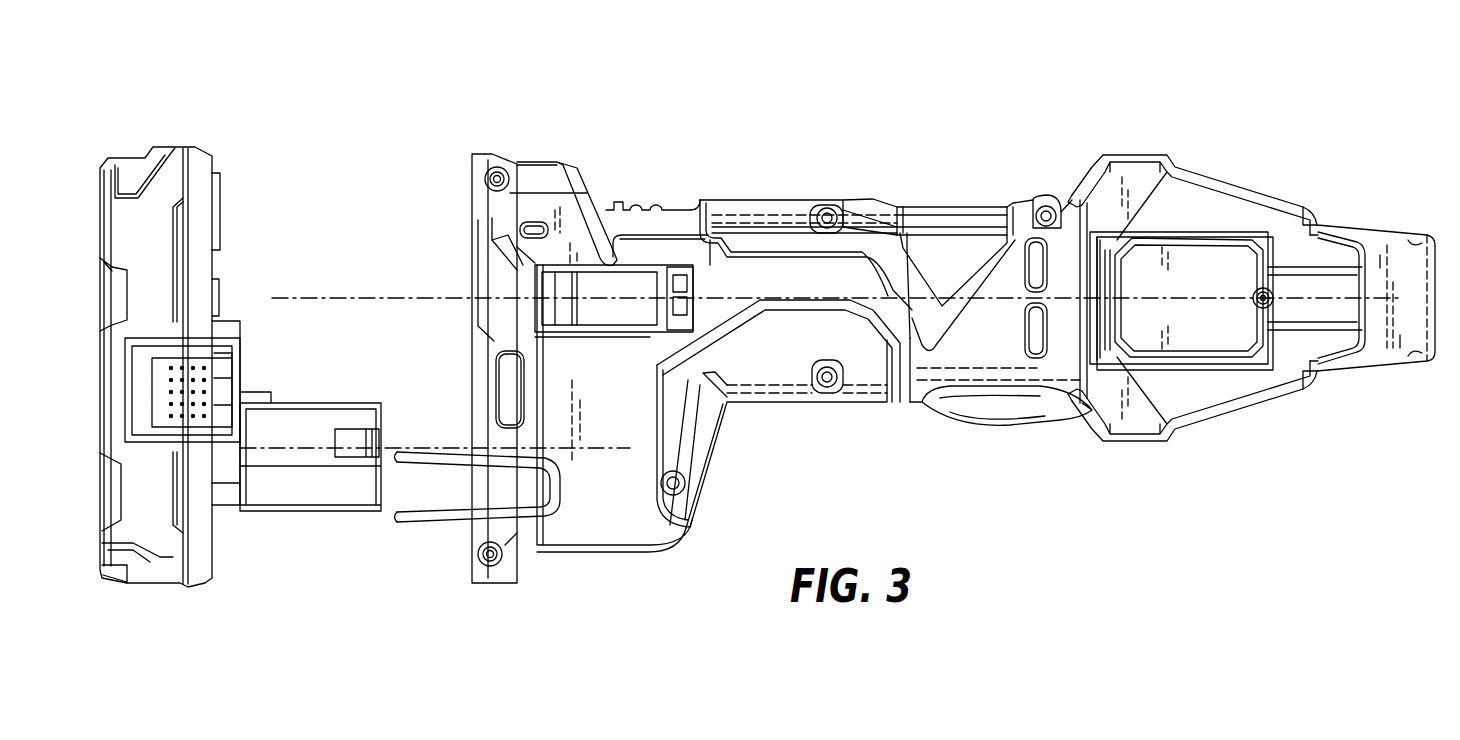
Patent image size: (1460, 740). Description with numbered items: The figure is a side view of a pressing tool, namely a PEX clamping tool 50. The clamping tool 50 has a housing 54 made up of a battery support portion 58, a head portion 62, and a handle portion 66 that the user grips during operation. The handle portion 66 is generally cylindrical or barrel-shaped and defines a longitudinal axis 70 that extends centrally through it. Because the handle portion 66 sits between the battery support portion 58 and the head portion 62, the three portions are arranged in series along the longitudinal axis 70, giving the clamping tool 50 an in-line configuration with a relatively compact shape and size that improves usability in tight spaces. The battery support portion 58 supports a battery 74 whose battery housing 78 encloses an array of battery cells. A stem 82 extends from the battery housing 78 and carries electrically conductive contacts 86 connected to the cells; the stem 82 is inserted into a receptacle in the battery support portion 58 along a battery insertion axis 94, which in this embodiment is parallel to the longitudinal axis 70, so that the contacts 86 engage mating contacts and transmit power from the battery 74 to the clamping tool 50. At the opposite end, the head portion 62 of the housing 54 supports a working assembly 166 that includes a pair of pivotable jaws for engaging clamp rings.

The clamping tool 50 is at (937, 77).
The housing 54 is at (1057, 159).
The battery support portion 58 is at (531, 176).
The head portion 62 is at (1243, 185).
The handle portion 66 is at (765, 212).
The longitudinal axis 70 is at (640, 290).
The battery 74 is at (242, 88).
The battery housing 78 is at (137, 183).
The stem 82 is at (288, 498).
The electrically conductive contacts 86 is at (353, 436).
The battery insertion axis 94 is at (610, 450).
The working assembly 166 is at (1392, 385).